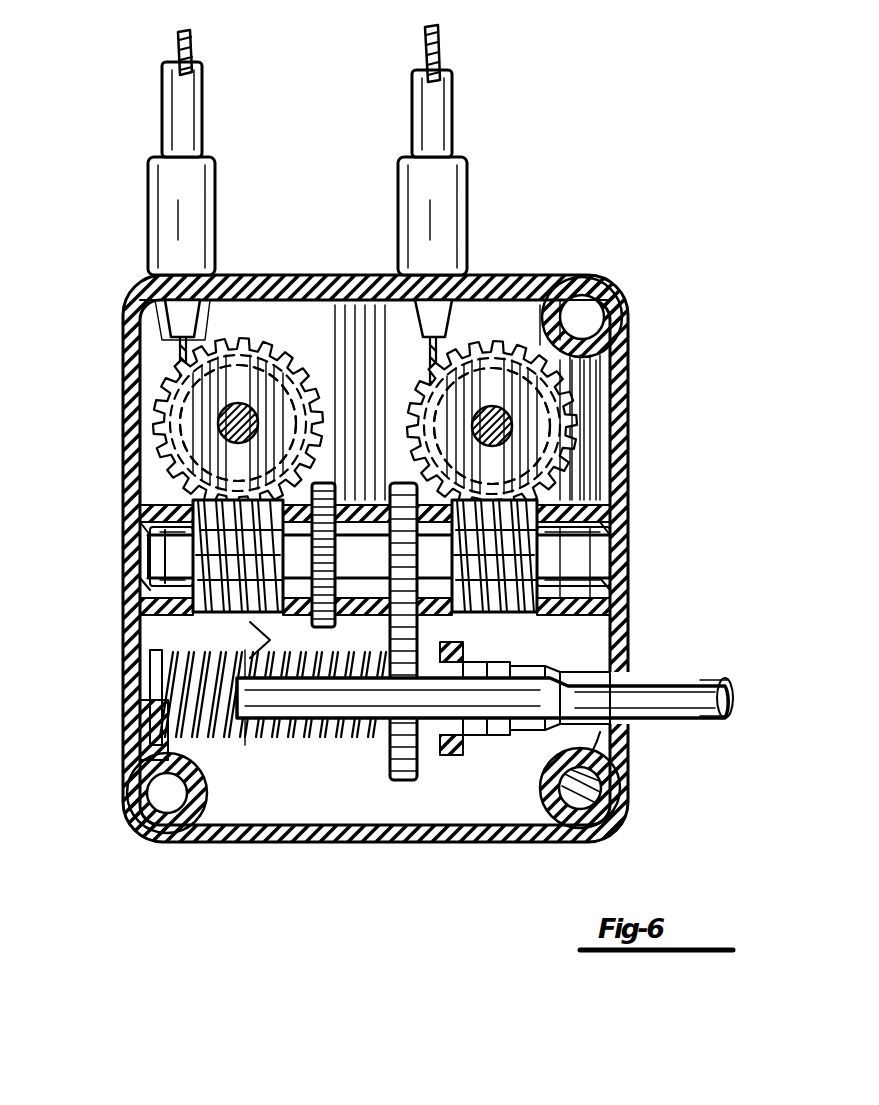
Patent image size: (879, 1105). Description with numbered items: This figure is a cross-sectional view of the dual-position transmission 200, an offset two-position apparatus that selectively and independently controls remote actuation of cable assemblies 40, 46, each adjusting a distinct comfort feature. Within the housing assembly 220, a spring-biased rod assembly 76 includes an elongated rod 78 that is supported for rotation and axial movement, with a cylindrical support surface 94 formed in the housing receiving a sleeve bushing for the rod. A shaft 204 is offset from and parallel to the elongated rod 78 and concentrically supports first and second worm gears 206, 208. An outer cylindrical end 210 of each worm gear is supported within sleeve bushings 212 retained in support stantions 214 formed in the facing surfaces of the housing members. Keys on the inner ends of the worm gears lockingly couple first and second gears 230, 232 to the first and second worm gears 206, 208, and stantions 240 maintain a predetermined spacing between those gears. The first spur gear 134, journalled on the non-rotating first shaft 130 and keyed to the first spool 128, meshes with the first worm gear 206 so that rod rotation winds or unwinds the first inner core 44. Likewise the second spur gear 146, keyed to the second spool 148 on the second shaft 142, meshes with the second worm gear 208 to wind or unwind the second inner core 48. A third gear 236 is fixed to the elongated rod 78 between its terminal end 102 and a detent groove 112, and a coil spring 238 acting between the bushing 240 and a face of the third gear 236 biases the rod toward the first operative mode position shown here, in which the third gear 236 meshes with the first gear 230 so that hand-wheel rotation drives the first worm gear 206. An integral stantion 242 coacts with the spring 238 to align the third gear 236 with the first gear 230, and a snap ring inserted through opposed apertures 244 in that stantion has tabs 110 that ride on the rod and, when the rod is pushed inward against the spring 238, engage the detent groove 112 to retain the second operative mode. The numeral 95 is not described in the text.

The cable assembly 40 is at (465, 143).
The first inner core 44 is at (440, 63).
The cable assembly 46 is at (262, 103).
The second inner core 48 is at (190, 55).
The spring-biased rod assembly 76 is at (760, 665).
The elongated rod 78 is at (702, 722).
The cylindrical support surface 94 is at (478, 298).
The sensor shaft 95 is at (170, 318).
The terminal end 102 is at (305, 830).
The tab portions 110 is at (605, 808).
The detent groove 112 is at (560, 700).
The first spool member 128 is at (615, 415).
The first shaft 130 is at (480, 383).
The first spur gear 134 is at (425, 408).
The second shaft 142 is at (240, 400).
The second spur gear 146 is at (255, 378).
The second spool 148 is at (345, 295).
The dual-position transmission 200 is at (680, 228).
The shaft 204 is at (612, 551).
The first worm gear 206 is at (425, 640).
The second worm gear 208 is at (215, 605).
The outer cylindrical end 210 is at (150, 548).
The sleeve bushings 212 is at (138, 605).
The support stantions 214 is at (470, 612).
The housing assembly 220 is at (630, 358).
The first gear 230 is at (430, 648).
The second gear 232 is at (333, 493).
The third gear 236 is at (405, 790).
The coil spring 238 is at (265, 830).
The bushing 240 is at (148, 748).
The integral stantion 242 is at (455, 755).
The opposed apertures 244 is at (495, 745).